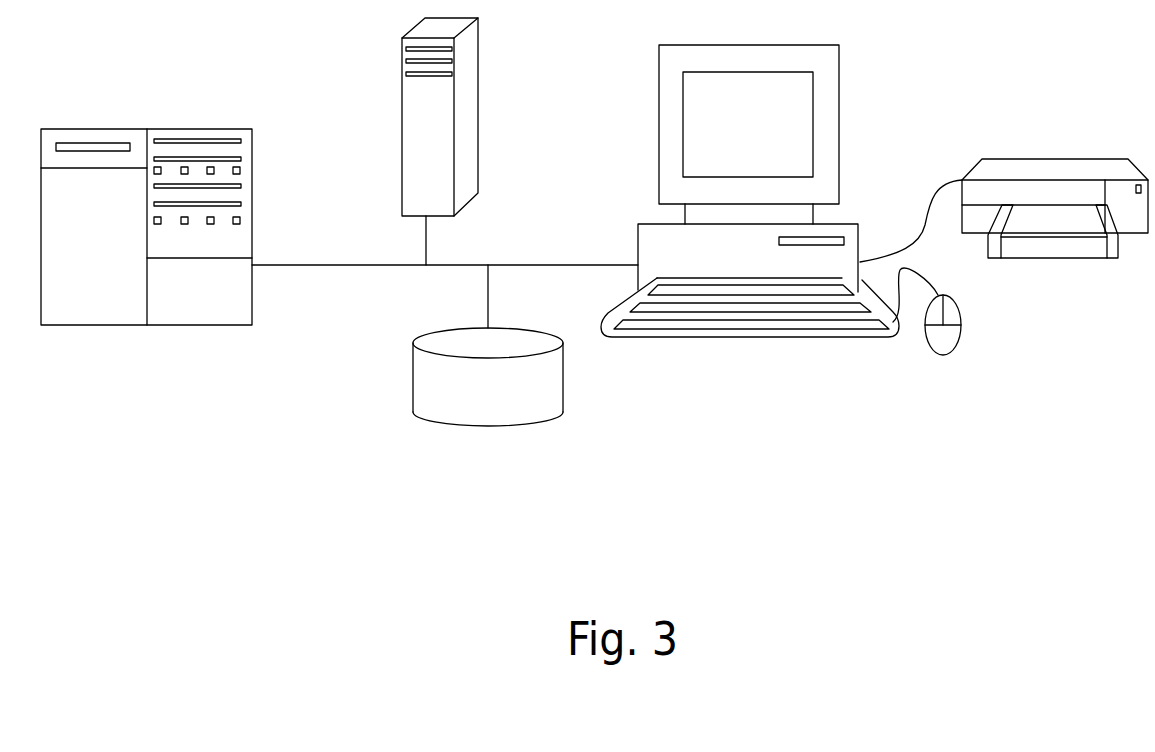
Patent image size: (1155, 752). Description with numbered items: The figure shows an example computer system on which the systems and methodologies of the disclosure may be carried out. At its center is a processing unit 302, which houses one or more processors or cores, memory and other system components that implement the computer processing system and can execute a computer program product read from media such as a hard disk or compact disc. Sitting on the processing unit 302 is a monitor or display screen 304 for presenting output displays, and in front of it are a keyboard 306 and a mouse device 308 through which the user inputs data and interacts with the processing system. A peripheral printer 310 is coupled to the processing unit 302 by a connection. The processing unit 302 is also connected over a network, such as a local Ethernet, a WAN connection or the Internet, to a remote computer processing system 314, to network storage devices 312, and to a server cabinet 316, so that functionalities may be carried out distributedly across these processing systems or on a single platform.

The processing unit 302 is at (643, 248).
The display screen 304 is at (840, 121).
The keyboard 306 is at (806, 338).
The mouse device 308 is at (962, 339).
The printer 310 is at (1055, 158).
The network storage devices 312 is at (505, 426).
The remote computer processing system 314 is at (479, 106).
The server cabinet 316 is at (190, 127).